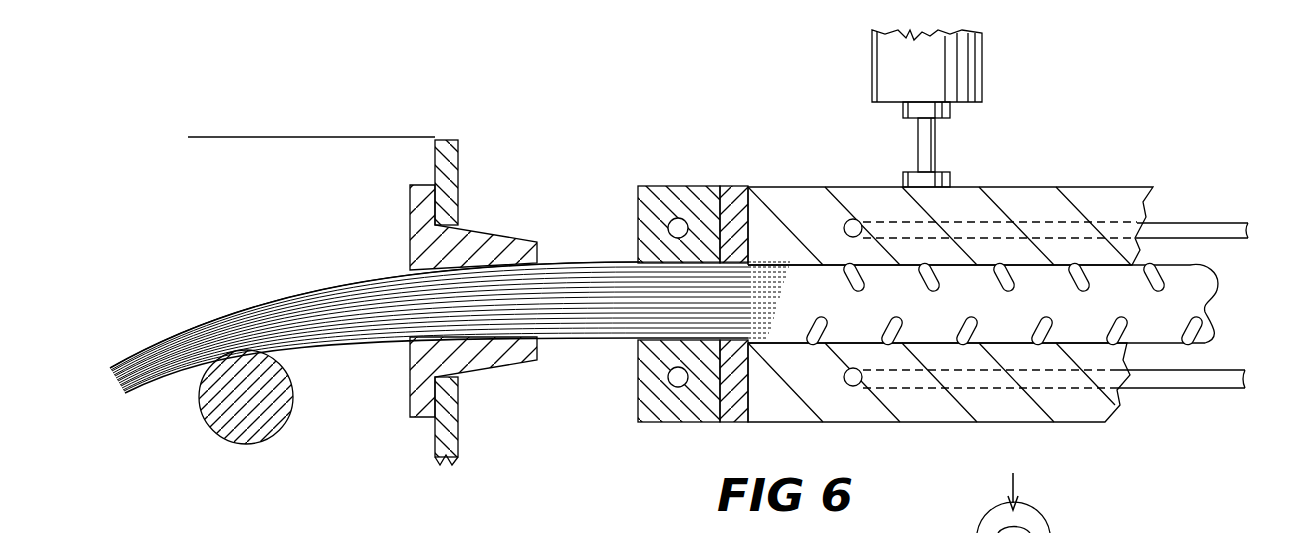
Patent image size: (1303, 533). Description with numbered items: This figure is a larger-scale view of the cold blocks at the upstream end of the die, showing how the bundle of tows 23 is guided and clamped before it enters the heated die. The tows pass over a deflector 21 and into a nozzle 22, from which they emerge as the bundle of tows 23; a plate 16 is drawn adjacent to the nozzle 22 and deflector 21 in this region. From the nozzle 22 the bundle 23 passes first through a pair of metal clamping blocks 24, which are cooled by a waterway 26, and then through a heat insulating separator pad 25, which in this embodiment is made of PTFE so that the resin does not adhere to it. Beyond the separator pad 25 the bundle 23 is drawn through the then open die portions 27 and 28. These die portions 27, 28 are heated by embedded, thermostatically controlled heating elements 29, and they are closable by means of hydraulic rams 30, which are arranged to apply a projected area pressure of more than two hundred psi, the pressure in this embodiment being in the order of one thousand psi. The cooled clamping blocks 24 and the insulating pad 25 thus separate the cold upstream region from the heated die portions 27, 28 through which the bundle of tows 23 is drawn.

The support plate 16 is at (455, 412).
The deflector 21 is at (265, 420).
The nozzle 22 is at (507, 243).
The bundle of tows 23 is at (582, 283).
The clamping blocks 24 is at (695, 197).
The heat insulating separator pad 25 is at (737, 200).
The waterway 26 is at (676, 218).
The die portion 27 is at (1091, 186).
The die portion 28 is at (1083, 430).
The heating elements 29 is at (848, 220).
The hydraulic rams 30 is at (893, 75).